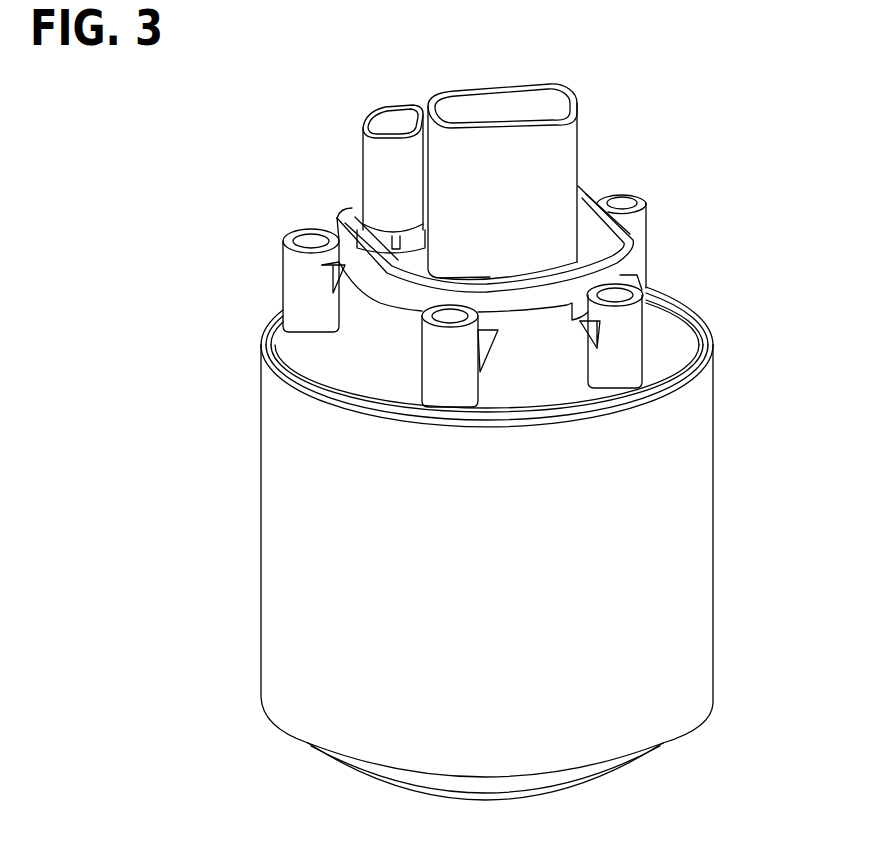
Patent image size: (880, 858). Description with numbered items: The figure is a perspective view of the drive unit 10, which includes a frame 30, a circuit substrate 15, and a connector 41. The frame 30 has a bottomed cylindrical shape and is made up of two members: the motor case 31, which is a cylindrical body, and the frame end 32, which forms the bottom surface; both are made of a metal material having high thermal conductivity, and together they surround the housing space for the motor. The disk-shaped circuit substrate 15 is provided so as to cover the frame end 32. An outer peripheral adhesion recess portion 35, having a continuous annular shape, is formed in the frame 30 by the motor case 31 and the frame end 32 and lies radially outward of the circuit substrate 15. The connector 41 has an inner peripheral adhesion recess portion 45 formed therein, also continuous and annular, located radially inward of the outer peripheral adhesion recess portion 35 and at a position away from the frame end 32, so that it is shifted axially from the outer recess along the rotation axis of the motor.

The drive unit 10 is at (263, 158).
The circuit substrate 15 is at (312, 350).
The frame 30 is at (255, 512).
The motor case 31 is at (312, 463).
The frame end 32 is at (312, 392).
The outer peripheral adhesion recess portion 35 is at (707, 323).
The connector 41 is at (405, 120).
The inner peripheral adhesion recess portion 45 is at (622, 245).